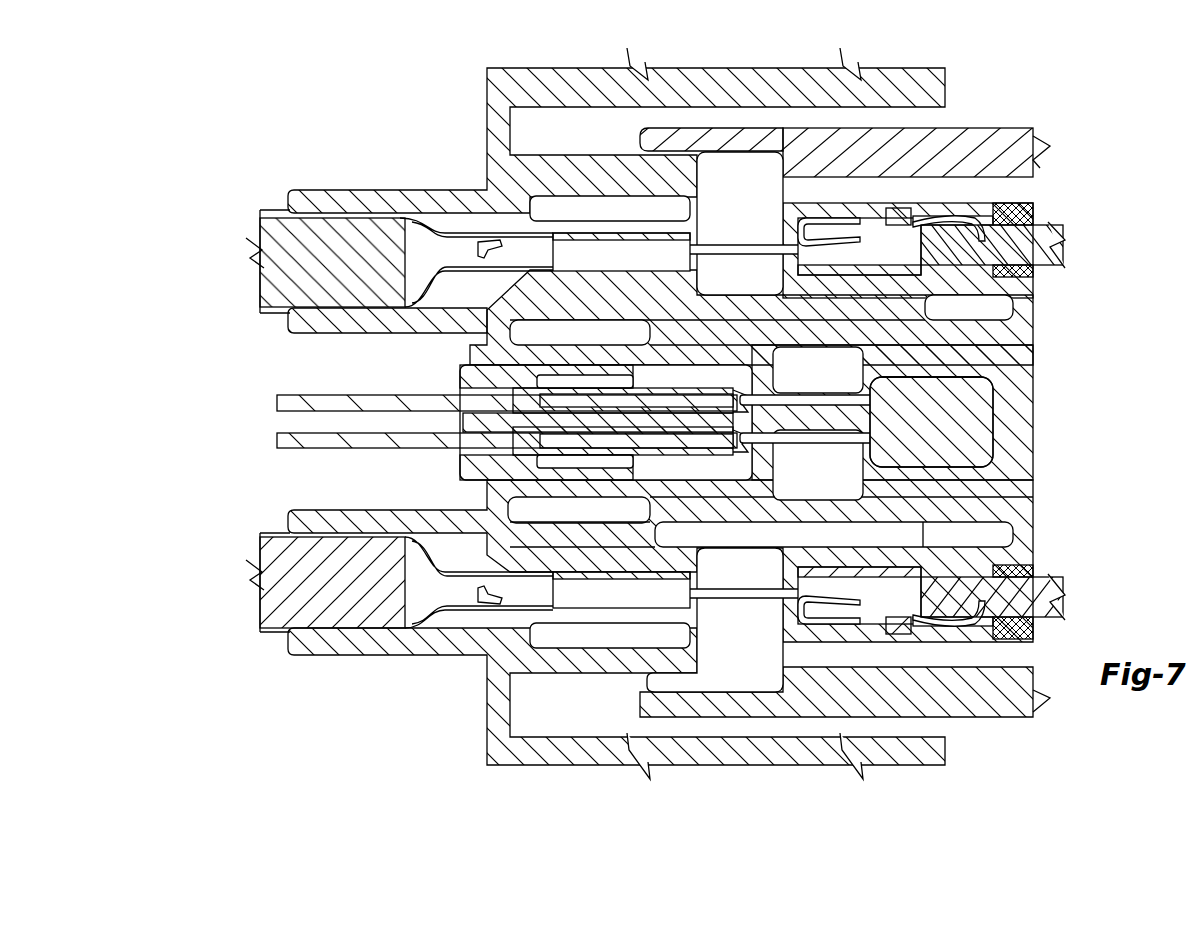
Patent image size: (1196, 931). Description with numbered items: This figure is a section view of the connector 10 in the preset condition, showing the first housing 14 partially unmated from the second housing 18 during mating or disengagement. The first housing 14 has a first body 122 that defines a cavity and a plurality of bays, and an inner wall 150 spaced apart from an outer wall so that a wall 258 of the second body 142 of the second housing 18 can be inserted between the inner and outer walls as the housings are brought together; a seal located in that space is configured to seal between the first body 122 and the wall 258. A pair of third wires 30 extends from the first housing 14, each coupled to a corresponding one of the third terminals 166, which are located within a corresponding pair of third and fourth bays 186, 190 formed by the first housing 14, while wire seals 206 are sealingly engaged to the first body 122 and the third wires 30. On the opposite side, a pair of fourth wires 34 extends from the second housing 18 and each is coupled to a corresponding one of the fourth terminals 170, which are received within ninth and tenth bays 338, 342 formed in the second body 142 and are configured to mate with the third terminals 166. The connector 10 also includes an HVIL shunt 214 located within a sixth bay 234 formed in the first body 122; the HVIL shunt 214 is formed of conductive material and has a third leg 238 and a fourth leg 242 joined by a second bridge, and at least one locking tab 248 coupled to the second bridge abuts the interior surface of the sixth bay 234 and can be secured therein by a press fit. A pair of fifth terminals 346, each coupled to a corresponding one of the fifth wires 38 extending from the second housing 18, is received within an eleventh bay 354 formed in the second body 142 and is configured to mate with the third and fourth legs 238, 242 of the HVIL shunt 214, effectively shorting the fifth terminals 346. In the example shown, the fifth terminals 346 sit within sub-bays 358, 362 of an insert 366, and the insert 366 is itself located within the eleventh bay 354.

The connector 10 is at (300, 103).
The first housing 14 is at (1102, 125).
The second housing 18 is at (328, 724).
The third wires 30 is at (1066, 258).
The fourth wires 34 is at (270, 285).
The fifth wires 38 is at (286, 441).
The first body 122 is at (1000, 130).
The second body 142 is at (592, 87).
The inner wall 150 is at (752, 135).
The third terminals 166 is at (843, 215).
The fourth terminals 170 is at (718, 240).
The third bay 186 is at (925, 290).
The fourth bay 190 is at (935, 555).
The wire seals 206 is at (1048, 215).
The HVIL shunt 214 is at (995, 405).
The sixth bay 234 is at (967, 480).
The third leg 238 is at (805, 402).
The fourth leg 242 is at (805, 443).
The locking tab 248 is at (977, 420).
The wall 258 is at (752, 757).
The ninth bay 338 is at (650, 218).
The tenth bay 342 is at (686, 616).
The fifth terminals 346 is at (548, 388).
The eleventh bay 354 is at (590, 352).
The sub-bay 358 is at (668, 490).
The sub-bay 362 is at (640, 462).
The insert 366 is at (547, 488).